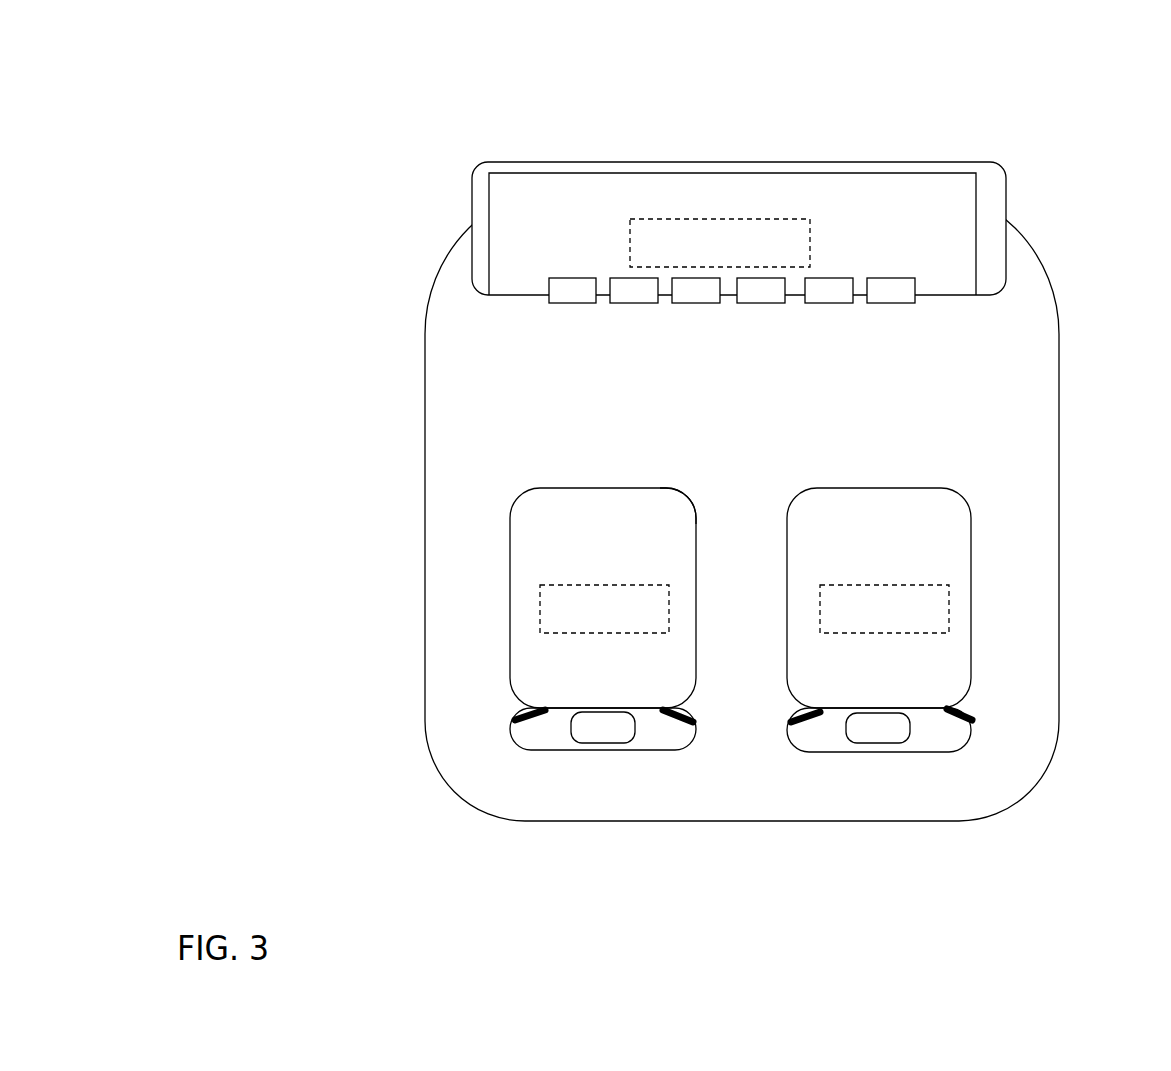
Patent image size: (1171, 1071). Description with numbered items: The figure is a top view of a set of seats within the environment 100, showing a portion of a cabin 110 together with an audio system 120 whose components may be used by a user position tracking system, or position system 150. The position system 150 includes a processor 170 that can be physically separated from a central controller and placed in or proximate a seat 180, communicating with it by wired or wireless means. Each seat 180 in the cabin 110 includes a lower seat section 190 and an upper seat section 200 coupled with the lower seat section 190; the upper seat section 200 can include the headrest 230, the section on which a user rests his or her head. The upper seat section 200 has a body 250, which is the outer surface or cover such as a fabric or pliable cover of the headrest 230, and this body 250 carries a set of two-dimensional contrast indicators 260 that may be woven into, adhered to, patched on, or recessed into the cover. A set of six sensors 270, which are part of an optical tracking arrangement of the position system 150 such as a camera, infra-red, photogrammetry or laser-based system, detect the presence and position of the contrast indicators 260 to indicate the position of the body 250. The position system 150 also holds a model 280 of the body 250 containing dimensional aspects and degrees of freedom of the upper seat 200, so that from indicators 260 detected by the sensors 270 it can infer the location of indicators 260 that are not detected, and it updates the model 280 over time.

The environment 100 is at (287, 100).
The cabin 110 is at (753, 403).
The audio system 120 is at (1057, 248).
The position system 150 is at (858, 212).
The processor 170 is at (927, 625).
The seat 180 is at (535, 475).
The lower seat section 190 is at (700, 497).
The upper seat section 200 is at (590, 755).
The headrest 230 is at (622, 698).
The body 250 is at (917, 707).
The two-dimensional contrast indicators 260 is at (500, 710).
The sensors 270 is at (620, 268).
The model 280 is at (782, 256).